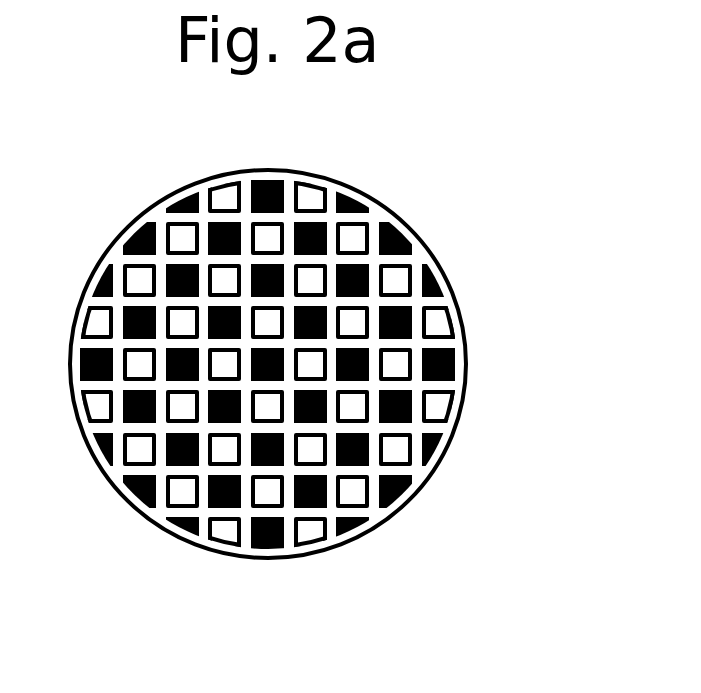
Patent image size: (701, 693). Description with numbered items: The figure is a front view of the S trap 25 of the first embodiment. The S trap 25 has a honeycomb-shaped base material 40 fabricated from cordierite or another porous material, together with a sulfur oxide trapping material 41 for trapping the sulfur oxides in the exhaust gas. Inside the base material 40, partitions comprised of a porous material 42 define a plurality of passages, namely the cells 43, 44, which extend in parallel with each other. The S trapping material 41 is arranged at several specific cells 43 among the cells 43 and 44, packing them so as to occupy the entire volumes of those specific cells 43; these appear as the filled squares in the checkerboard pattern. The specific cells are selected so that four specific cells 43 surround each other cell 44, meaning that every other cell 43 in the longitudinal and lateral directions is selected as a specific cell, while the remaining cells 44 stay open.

The S trap 25 is at (316, 393).
The honeycomb-shaped base material 40 is at (463, 410).
The sulfur oxide trapping material 41 is at (313, 502).
The porous material partitions 42 is at (400, 425).
The specific cells 43 is at (267, 405).
The cells 44 is at (321, 421).